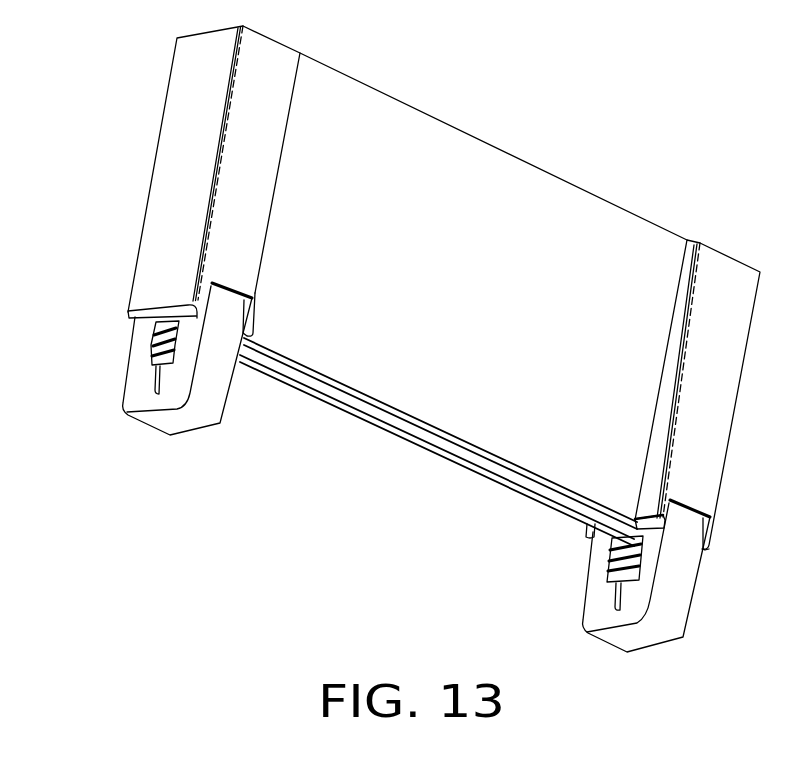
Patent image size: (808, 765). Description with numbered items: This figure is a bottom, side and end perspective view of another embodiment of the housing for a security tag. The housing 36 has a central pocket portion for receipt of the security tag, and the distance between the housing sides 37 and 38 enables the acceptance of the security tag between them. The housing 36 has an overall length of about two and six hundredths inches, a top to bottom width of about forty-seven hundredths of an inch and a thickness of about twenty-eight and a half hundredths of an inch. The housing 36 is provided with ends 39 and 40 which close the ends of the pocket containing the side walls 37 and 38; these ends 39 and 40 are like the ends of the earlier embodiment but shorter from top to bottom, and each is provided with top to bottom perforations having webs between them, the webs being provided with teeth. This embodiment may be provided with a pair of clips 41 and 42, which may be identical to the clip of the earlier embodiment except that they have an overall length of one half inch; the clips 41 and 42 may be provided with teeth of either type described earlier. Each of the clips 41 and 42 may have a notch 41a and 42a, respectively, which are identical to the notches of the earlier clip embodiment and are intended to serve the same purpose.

The housing 36 is at (413, 110).
The housing side 37 is at (413, 422).
The housing side 38 is at (448, 457).
The end 39 is at (725, 363).
The end 40 is at (187, 153).
The clip 41 is at (662, 632).
The notch 41a is at (620, 600).
The clip 42 is at (207, 412).
The notch 42a is at (158, 383).